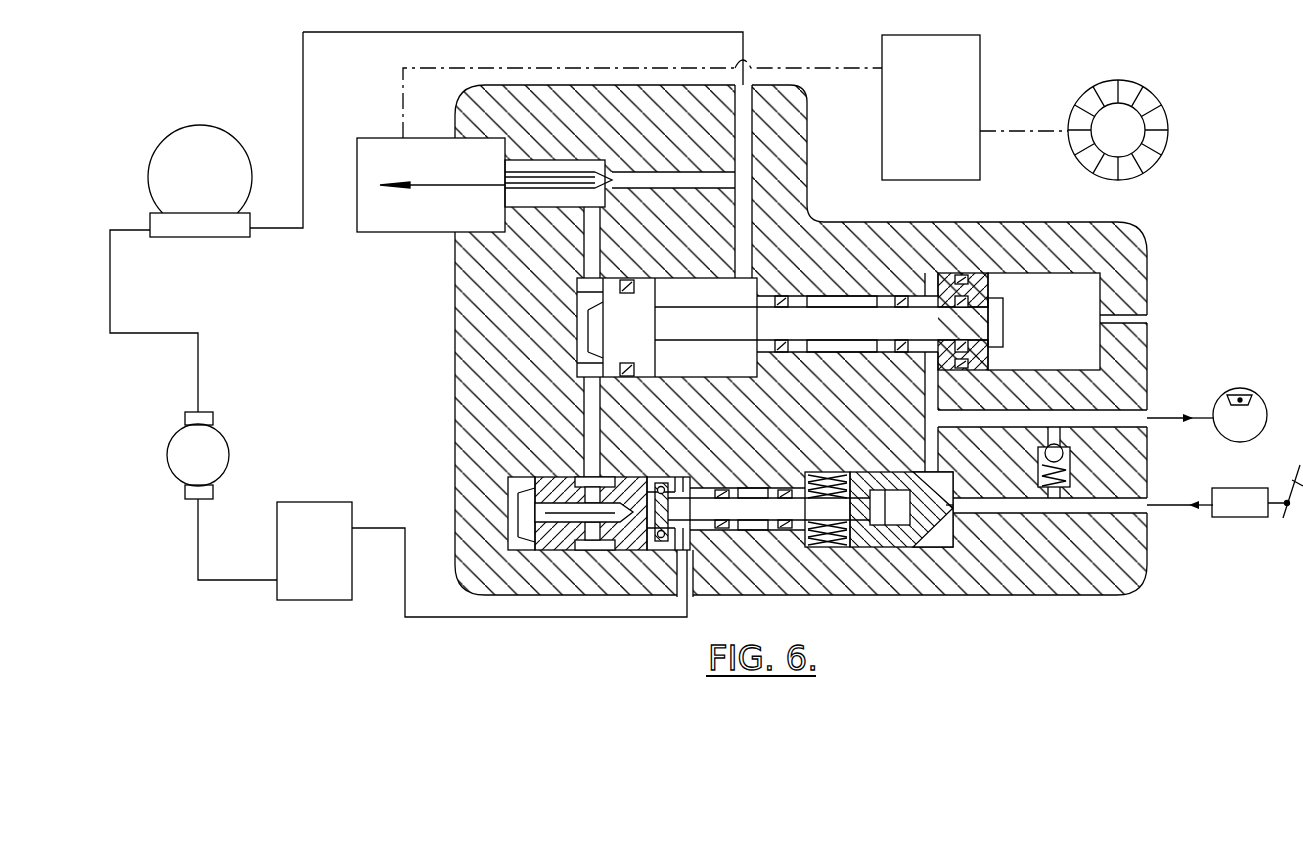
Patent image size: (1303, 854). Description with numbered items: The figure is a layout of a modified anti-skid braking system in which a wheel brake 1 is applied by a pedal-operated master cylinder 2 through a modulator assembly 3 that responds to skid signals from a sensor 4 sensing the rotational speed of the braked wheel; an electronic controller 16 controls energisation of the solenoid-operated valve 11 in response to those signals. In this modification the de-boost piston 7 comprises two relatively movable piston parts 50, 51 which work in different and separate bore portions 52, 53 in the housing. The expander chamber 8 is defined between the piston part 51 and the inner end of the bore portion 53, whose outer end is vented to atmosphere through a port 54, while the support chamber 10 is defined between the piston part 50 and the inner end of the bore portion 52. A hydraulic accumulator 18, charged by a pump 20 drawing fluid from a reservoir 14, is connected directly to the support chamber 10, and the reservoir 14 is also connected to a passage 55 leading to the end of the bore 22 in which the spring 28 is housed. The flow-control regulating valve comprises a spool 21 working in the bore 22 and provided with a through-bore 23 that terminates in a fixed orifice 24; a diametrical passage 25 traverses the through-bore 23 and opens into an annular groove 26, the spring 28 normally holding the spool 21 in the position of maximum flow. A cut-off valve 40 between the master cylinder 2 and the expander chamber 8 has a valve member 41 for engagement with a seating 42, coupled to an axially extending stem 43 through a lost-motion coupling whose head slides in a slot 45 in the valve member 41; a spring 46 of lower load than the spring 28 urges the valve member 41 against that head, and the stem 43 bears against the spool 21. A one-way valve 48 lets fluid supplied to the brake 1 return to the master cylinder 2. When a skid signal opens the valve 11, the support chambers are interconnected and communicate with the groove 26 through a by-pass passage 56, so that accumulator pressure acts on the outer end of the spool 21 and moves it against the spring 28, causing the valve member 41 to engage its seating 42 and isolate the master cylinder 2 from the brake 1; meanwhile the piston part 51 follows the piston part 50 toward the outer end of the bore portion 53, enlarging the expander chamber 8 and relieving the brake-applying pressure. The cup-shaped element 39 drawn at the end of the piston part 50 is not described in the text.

The wheel brake 1 is at (1255, 425).
The master cylinder 2 is at (1257, 500).
The modulator assembly 3 is at (620, 114).
The sensor 4 is at (1090, 105).
The de-boost piston 7 is at (793, 312).
The expander chamber 8 is at (930, 285).
The support chamber 10 is at (737, 290).
The second solenoid-operated valve 11 is at (388, 207).
The reservoir 14 is at (323, 525).
The electronic controller 16 is at (945, 58).
The hydraulic accumulator 18 is at (210, 223).
The pump 20 is at (215, 450).
The spool 21 is at (568, 545).
The bore 22 is at (515, 550).
The through-bore 23 is at (560, 530).
The fixed orifice 24 is at (652, 470).
The diametrical passage 25 is at (605, 478).
The annular groove 26 is at (600, 548).
The spring 28 is at (665, 550).
The cup 39 is at (577, 283).
The cut-off valve 40 is at (879, 532).
The valve member 41 is at (915, 547).
The seating 42 is at (1020, 525).
The stem 43 is at (772, 510).
The slot 45 is at (930, 512).
The spring 46 is at (823, 545).
The one-way valve 48 is at (1060, 450).
The piston part 50 is at (645, 278).
The piston part 51 is at (975, 285).
The bore portion 52 is at (698, 278).
The bore portion 53 is at (1060, 270).
The port 54 is at (1148, 320).
The passage 55 is at (685, 588).
The by-pass passage 56 is at (584, 425).